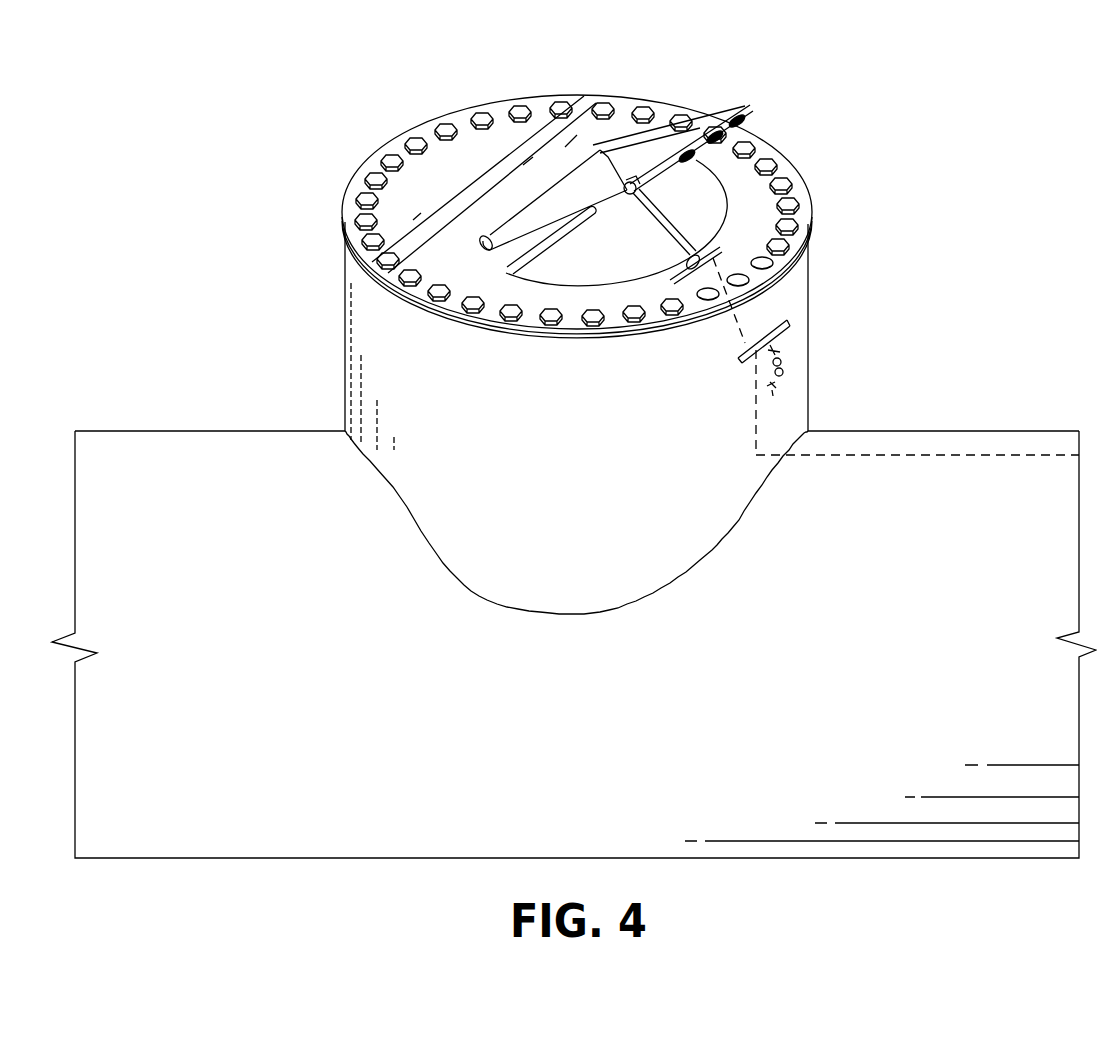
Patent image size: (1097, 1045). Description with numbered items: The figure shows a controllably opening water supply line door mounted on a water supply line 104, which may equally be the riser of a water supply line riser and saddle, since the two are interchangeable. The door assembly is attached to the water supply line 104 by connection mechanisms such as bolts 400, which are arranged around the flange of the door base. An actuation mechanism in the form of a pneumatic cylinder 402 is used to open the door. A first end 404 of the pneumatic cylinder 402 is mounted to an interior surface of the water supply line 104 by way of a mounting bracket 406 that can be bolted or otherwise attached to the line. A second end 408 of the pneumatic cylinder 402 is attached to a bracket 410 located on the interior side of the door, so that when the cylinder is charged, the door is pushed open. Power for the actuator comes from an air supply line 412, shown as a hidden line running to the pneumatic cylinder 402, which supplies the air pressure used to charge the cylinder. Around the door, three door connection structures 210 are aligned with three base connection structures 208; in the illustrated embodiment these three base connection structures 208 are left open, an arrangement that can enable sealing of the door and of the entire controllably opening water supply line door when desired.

The water supply line 104 is at (792, 411).
The base connection structures 208 is at (770, 265).
The door connection structures 210 is at (730, 116).
The bolts 400 is at (774, 168).
The pneumatic cylinder 402 is at (750, 318).
The first end 404 is at (787, 368).
The mounting bracket 406 is at (773, 388).
The second end 408 is at (673, 258).
The bracket 410 is at (642, 168).
The air supply line 412 is at (904, 460).